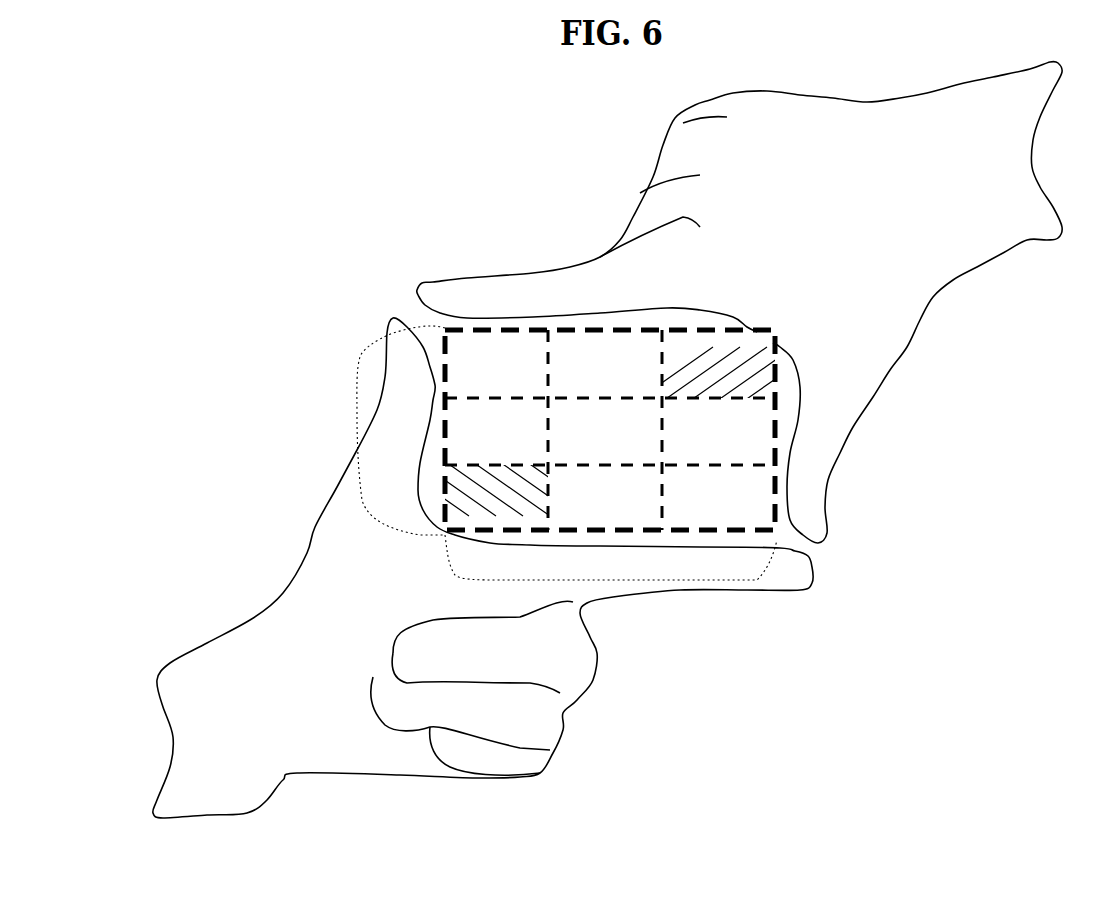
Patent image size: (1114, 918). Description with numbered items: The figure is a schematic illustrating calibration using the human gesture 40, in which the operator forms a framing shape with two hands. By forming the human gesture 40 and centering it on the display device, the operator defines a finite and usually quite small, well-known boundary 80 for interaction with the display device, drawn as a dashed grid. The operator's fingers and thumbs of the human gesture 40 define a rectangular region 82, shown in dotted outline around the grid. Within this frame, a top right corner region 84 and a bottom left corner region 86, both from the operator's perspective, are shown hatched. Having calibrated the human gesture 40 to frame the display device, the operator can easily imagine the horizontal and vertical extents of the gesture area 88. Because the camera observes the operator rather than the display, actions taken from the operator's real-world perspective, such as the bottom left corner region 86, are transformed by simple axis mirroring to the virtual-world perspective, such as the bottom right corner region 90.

The human gesture 40 is at (262, 207).
The boundary 80 is at (780, 430).
The rectangular region 82 is at (357, 415).
The top right corner region 84 is at (730, 363).
The bottom left corner region 86 is at (482, 503).
The gesture area 88 is at (487, 350).
The bottom right corner region 90 is at (727, 503).